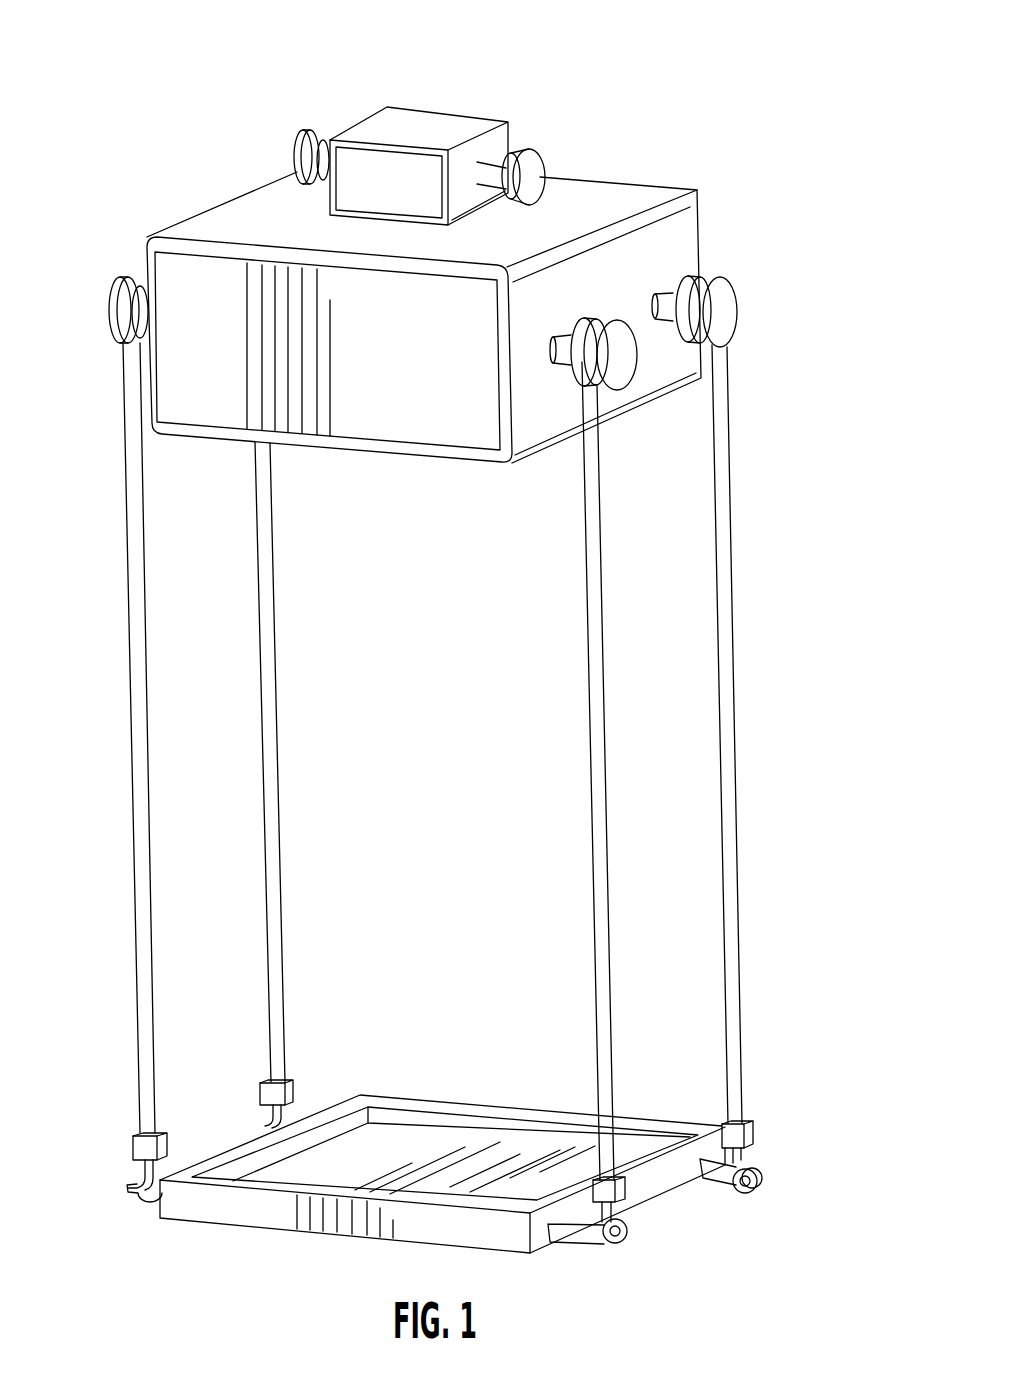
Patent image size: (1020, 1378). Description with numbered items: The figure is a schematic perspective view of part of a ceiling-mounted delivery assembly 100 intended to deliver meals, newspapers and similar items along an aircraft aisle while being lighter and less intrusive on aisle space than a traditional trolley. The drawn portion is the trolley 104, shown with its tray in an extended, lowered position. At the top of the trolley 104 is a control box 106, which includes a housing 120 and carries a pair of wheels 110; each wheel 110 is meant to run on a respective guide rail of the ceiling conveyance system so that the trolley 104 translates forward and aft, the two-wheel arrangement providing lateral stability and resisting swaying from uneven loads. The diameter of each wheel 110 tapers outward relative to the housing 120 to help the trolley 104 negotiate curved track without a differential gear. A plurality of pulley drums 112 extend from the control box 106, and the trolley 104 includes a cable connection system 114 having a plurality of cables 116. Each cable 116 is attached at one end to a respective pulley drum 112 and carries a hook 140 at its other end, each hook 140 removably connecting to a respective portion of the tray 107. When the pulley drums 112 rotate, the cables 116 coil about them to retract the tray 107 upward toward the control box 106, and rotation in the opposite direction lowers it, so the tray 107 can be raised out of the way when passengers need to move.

The ceiling-mounted delivery assembly 100 is at (834, 111).
The trolley 104 is at (714, 124).
The control box 106 is at (227, 230).
The tray 107 is at (433, 1094).
The wheel 110 is at (307, 136).
The pulley drum 112 is at (110, 300).
The cable connection system 114 is at (788, 760).
The cable 116 is at (268, 680).
The housing 120 is at (676, 243).
The hook 140 is at (620, 1243).